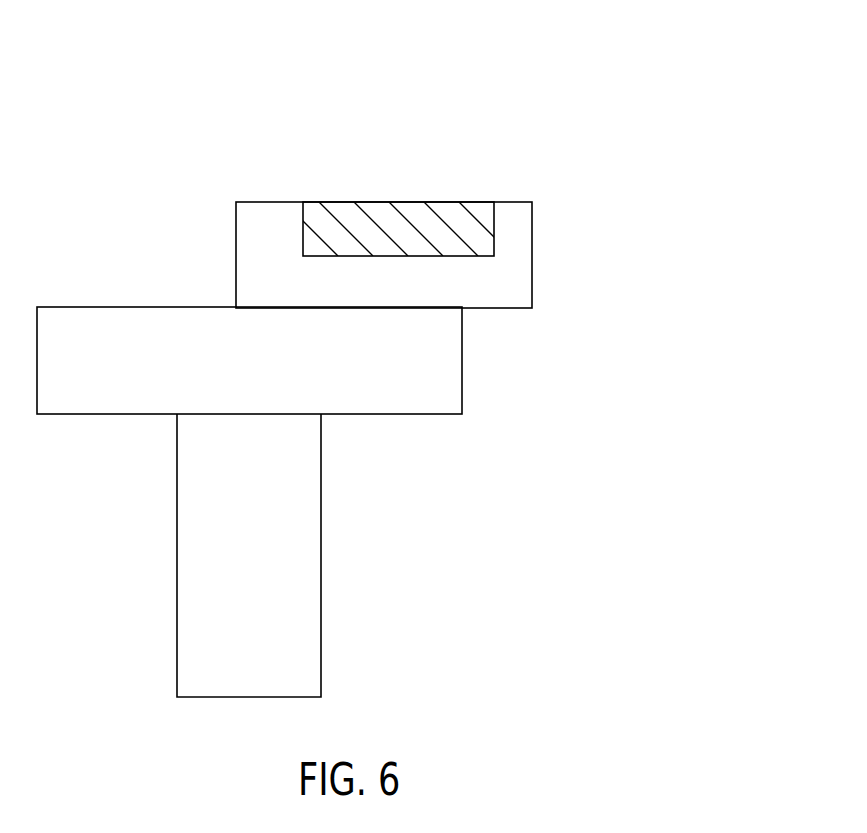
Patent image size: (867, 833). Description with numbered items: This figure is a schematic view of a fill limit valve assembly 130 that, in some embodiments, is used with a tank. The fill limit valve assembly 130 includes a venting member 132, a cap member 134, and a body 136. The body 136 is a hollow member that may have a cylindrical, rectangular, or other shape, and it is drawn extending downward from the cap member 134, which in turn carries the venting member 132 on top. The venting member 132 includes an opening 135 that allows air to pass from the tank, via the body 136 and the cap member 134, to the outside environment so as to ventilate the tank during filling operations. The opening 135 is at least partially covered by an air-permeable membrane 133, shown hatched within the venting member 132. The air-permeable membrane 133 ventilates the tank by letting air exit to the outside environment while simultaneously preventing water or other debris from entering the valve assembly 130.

The fill limit valve assembly 130 is at (640, 53).
The venting member 132 is at (383, 220).
The air-permeable membrane 133 is at (398, 198).
The cap member 134 is at (276, 360).
The opening 135 is at (540, 249).
The body 136 is at (278, 555).